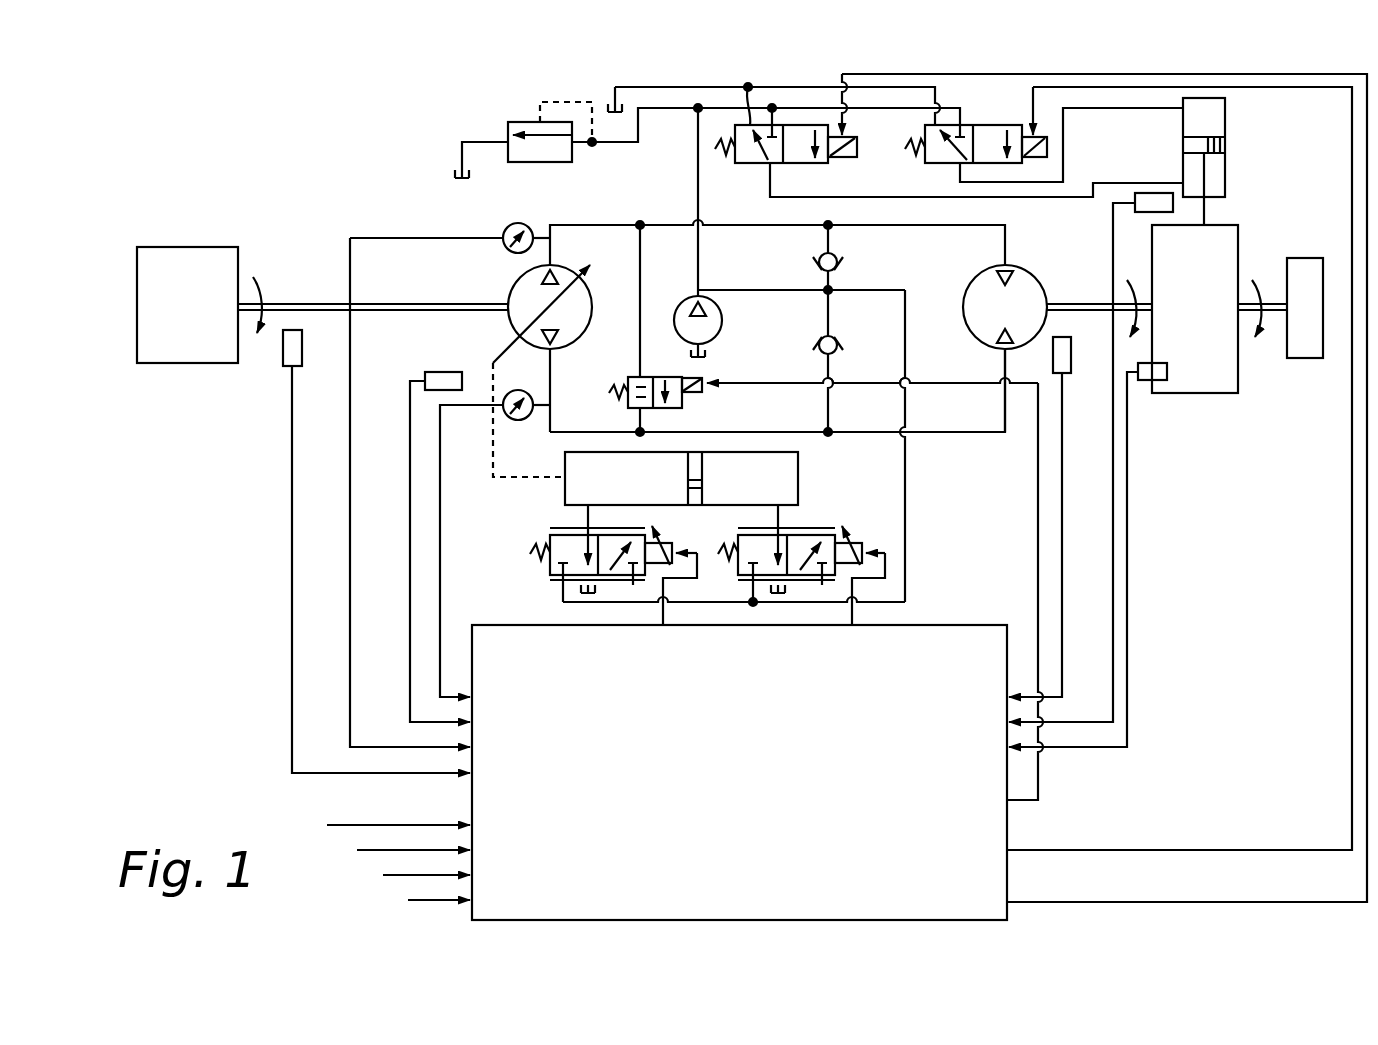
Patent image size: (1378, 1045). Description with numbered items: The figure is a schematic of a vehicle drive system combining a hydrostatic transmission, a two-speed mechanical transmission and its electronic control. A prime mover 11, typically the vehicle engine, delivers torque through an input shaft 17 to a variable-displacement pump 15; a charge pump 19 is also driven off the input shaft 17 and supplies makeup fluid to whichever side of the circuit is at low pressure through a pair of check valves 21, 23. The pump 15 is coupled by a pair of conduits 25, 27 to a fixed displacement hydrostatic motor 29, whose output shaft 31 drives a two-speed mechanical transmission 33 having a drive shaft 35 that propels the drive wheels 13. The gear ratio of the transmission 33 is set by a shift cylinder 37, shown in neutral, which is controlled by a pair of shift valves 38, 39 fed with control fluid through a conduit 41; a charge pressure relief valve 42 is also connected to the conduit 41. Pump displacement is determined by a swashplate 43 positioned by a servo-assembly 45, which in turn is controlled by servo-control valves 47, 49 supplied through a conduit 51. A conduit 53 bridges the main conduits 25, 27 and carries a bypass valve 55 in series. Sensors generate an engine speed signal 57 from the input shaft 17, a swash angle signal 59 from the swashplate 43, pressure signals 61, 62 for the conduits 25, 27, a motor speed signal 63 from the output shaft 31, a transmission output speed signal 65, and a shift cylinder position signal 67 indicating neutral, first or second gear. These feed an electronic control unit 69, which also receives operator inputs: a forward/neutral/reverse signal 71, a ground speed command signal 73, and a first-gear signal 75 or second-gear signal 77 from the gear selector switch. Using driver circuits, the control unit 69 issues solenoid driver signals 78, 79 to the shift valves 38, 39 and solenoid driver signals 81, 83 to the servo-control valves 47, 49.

The prime mover 11 is at (168, 246).
The drive wheels 13 is at (1306, 362).
The variable-displacement pump 15 is at (509, 292).
The input shaft 17 is at (290, 302).
The charge pump 19 is at (724, 318).
The check valve 21 is at (818, 346).
The check valve 23 is at (846, 266).
The conduit 25 is at (952, 432).
The conduit 27 is at (608, 225).
The hydrostatic motor 29 is at (1020, 266).
The output shaft 31 is at (1065, 303).
The two-speed mechanical transmission 33 is at (1197, 397).
The drive shaft 35 is at (1272, 306).
The shift cylinder 37 is at (1230, 170).
The shift valve 38 is at (937, 166).
The shift valve 39 is at (760, 165).
The conduit 41 is at (698, 132).
The charge pressure relief valve 42 is at (522, 122).
The swashplate 43 is at (497, 355).
The servo-assembly 45 is at (563, 465).
The servo-control valve 47 is at (560, 530).
The servo-control valve 49 is at (812, 528).
The conduit 51 is at (772, 290).
The conduit 53 is at (638, 300).
The bypass valve 55 is at (628, 372).
The engine speed signal 57 is at (292, 556).
The swash angle signal 59 is at (410, 485).
The pressure signal 61 is at (440, 535).
The pressure signal 62 is at (436, 237).
The motor speed signal 63 is at (1064, 570).
The transmission output speed signal 65 is at (1127, 637).
The shift cylinder position signal 67 is at (1113, 412).
The electronic control unit 69 is at (1010, 870).
The F/N/R signal 71 is at (330, 826).
The ground speed command signal 73 is at (359, 851).
The Gear 1 signal 75 is at (385, 876).
The Gear 2 signal 77 is at (410, 901).
The solenoid driver signal 78 is at (1140, 852).
The solenoid driver signal 79 is at (1140, 903).
The solenoid driver signal 81 is at (680, 552).
The solenoid driver signal 83 is at (868, 553).